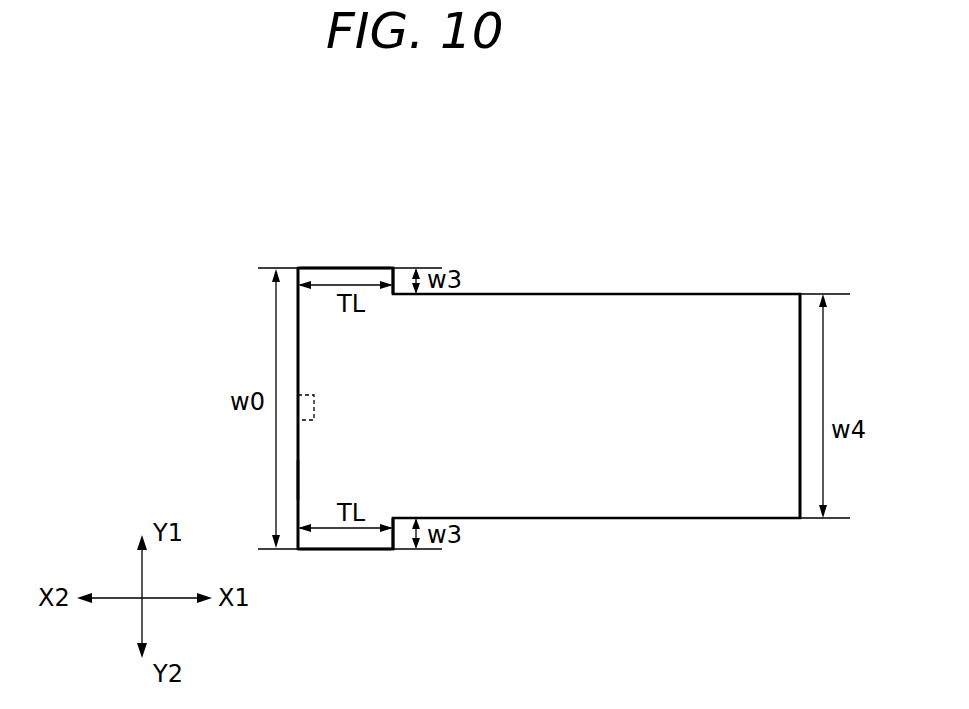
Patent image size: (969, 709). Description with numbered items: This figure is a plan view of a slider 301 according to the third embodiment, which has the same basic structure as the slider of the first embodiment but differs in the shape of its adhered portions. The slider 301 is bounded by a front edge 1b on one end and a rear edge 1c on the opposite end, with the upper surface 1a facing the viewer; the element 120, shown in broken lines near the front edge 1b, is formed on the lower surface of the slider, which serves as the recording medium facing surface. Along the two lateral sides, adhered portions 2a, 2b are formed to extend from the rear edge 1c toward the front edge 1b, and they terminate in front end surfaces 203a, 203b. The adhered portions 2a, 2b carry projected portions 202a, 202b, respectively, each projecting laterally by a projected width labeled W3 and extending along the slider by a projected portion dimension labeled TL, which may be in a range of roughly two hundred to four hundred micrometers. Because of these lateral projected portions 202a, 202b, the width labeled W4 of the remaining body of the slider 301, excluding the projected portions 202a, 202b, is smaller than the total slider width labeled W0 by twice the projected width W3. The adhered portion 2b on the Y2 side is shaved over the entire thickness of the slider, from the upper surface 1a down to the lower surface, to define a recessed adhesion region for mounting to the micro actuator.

The slider 301 is at (696, 590).
The upper surface 1a is at (328, 472).
The front edge 1b is at (297, 357).
The rear edge 1c is at (800, 376).
The element 120 is at (298, 417).
The adhered portion 2a is at (347, 182).
The adhered portion 2b is at (369, 603).
The projected portion 202a is at (332, 277).
The projected portion 202b is at (322, 540).
The front end surface 203a is at (392, 278).
The front end surface 203b is at (393, 540).